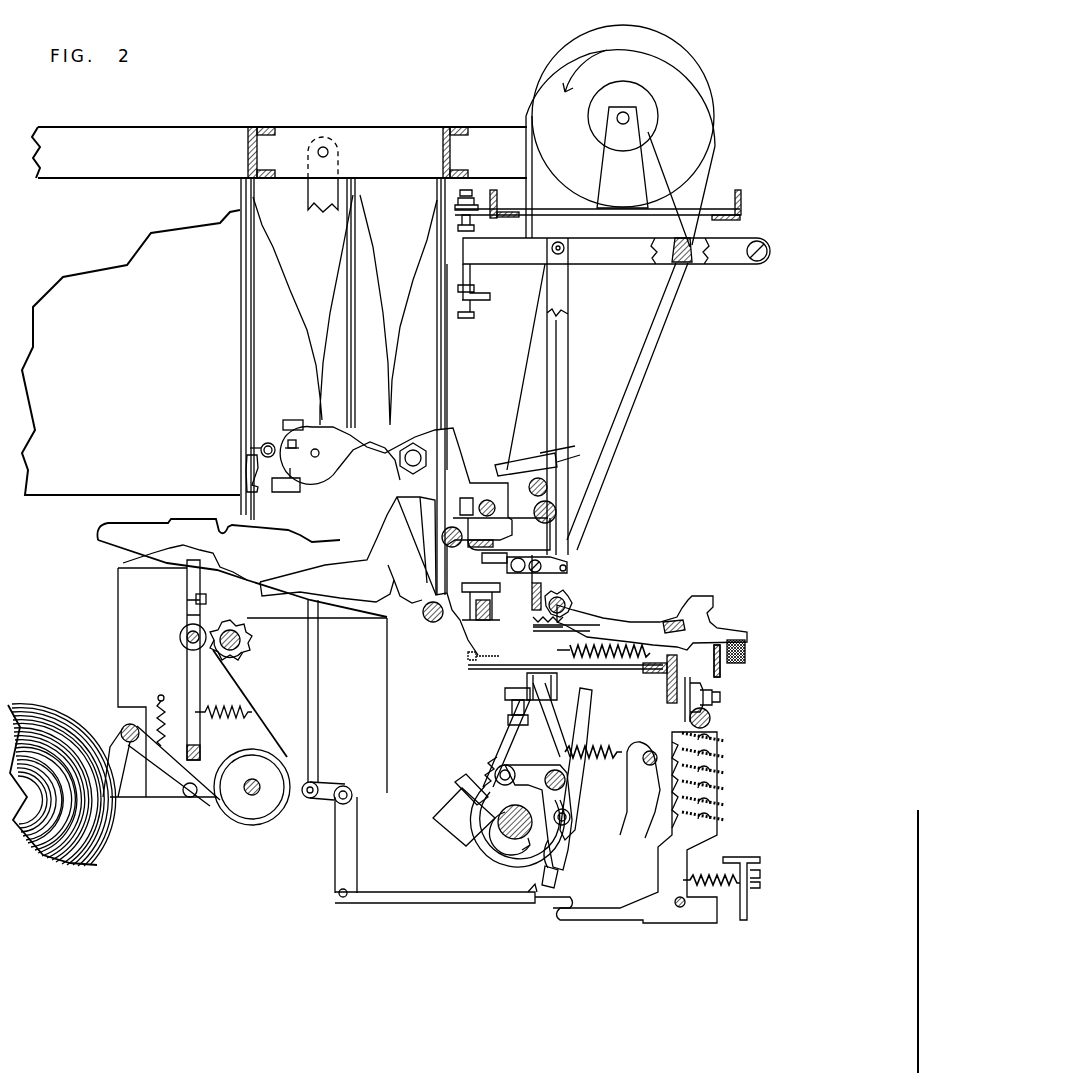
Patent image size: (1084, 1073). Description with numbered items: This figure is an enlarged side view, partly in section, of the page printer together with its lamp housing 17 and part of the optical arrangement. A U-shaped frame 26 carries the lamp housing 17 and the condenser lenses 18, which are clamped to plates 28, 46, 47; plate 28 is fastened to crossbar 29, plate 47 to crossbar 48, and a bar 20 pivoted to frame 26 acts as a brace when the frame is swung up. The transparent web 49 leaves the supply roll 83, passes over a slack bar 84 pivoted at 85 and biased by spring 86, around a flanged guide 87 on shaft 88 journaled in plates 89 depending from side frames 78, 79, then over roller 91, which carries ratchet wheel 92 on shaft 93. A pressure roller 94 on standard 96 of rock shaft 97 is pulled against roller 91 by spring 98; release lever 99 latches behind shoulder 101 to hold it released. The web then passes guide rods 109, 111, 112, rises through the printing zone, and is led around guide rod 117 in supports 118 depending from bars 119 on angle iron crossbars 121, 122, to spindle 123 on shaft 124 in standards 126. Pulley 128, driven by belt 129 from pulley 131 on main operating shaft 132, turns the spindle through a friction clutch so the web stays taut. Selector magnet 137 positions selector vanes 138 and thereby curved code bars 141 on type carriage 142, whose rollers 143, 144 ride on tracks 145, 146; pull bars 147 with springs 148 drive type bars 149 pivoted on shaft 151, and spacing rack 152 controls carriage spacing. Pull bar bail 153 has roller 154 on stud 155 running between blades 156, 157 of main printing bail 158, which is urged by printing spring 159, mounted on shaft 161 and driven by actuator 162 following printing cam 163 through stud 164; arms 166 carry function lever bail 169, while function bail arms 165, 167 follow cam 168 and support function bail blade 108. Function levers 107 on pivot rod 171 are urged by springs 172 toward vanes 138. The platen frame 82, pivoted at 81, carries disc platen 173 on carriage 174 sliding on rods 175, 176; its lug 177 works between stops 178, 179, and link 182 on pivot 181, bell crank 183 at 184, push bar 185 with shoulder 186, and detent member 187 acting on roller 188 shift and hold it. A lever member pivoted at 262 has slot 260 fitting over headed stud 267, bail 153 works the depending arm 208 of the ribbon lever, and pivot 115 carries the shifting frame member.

The lamp housing 17 is at (50, 498).
The condenser lenses 18 is at (331, 253).
The bar 20 is at (308, 203).
The U-shaped frame 26 is at (163, 132).
The plate 28 is at (238, 188).
The crossbar 29 is at (262, 140).
The plate 46 is at (357, 188).
The plate 47 is at (438, 188).
The crossbar 48 is at (455, 150).
The record strip or web 49 is at (569, 390).
The side frame 78 is at (97, 540).
The side frame 79 is at (123, 563).
The pivot 81 is at (420, 454).
The platen frame 82 is at (505, 444).
The roll 83 is at (33, 717).
The slack bar 84 is at (133, 745).
The pivot 85 is at (188, 797).
The spring 86 is at (157, 720).
The flanged cylindrical guide 87 is at (275, 768).
The shaft 88 is at (256, 795).
The plates 89 is at (118, 628).
The roller 91 is at (230, 656).
The ratchet wheel 92 is at (245, 650).
The shaft 93 is at (252, 636).
The pressure roller 94 is at (182, 645).
The standard 96 is at (187, 678).
The rock shaft 97 is at (195, 760).
The spring 98 is at (220, 718).
The pressure roller release lever 99 is at (187, 618).
The shoulder 101 is at (206, 600).
The function levers 107 is at (660, 838).
The function bail blade 108 is at (556, 882).
The guide rod 109 is at (424, 610).
The guide rod 111 is at (441, 538).
The guide rod 112 is at (556, 515).
The pivot 115 is at (760, 262).
The guide rod 117 is at (688, 262).
The supports 118 is at (670, 232).
The bars 119 is at (700, 210).
The angle iron crossbar 121 is at (498, 200).
The angle iron crossbar 122 is at (742, 194).
The spindle 123 is at (650, 100).
The shaft 124 is at (630, 118).
The standards 126 is at (634, 137).
The pulley 128 is at (685, 66).
The belt 129 is at (654, 334).
The pulley 131 is at (485, 850).
The main operating shaft 132 is at (510, 838).
The selector magnet 137 is at (445, 812).
The selector vanes 138 is at (720, 745).
The curved code bars 141 is at (738, 668).
The type carriage 142 is at (724, 705).
The roller 143 is at (672, 692).
The roller 144 is at (484, 612).
The track 145 is at (712, 722).
The track 146 is at (478, 620).
The pull bars 147 is at (700, 632).
The springs 148 is at (615, 660).
The type bars 149 is at (652, 616).
The shaft 151 is at (566, 596).
The spacing rack 152 is at (466, 655).
The pull bar bail 153 is at (468, 667).
The roller 154 is at (512, 696).
The stud 155 is at (512, 710).
The blade 156 is at (510, 724).
The blade 157 is at (560, 686).
The main printing bail 158 is at (515, 755).
The printing spring 159 is at (590, 748).
The shaft 161 is at (566, 780).
The printing bail actuator 162 is at (574, 797).
The printing cam 163 is at (560, 838).
The stud 164 is at (575, 710).
The arm 165 is at (514, 768).
The arms 166 is at (587, 818).
The arm 167 is at (562, 855).
The function bail cam 168 is at (458, 786).
The function lever bail 169 is at (631, 795).
The pivot rod 171 is at (686, 906).
The springs 172 is at (712, 870).
The platen 173 is at (505, 465).
The carriage 174 is at (496, 490).
The rod 175 is at (486, 500).
The rod 176 is at (548, 486).
The lug 177 is at (290, 444).
The adjustable stop 178 is at (283, 425).
The adjustable stop 179 is at (290, 483).
The pivot 181 is at (320, 457).
The link 182 is at (318, 696).
The bell crank lever 183 is at (335, 858).
The pivot 184 is at (347, 786).
The push bar 185 is at (480, 904).
The shoulder 186 is at (541, 910).
The detent member 187 is at (247, 472).
The detent roller 188 is at (250, 450).
The depending arm 208 is at (503, 557).
The open-ended slot 260 is at (566, 250).
The pivot 262 is at (578, 462).
The headed stud 267 is at (563, 256).